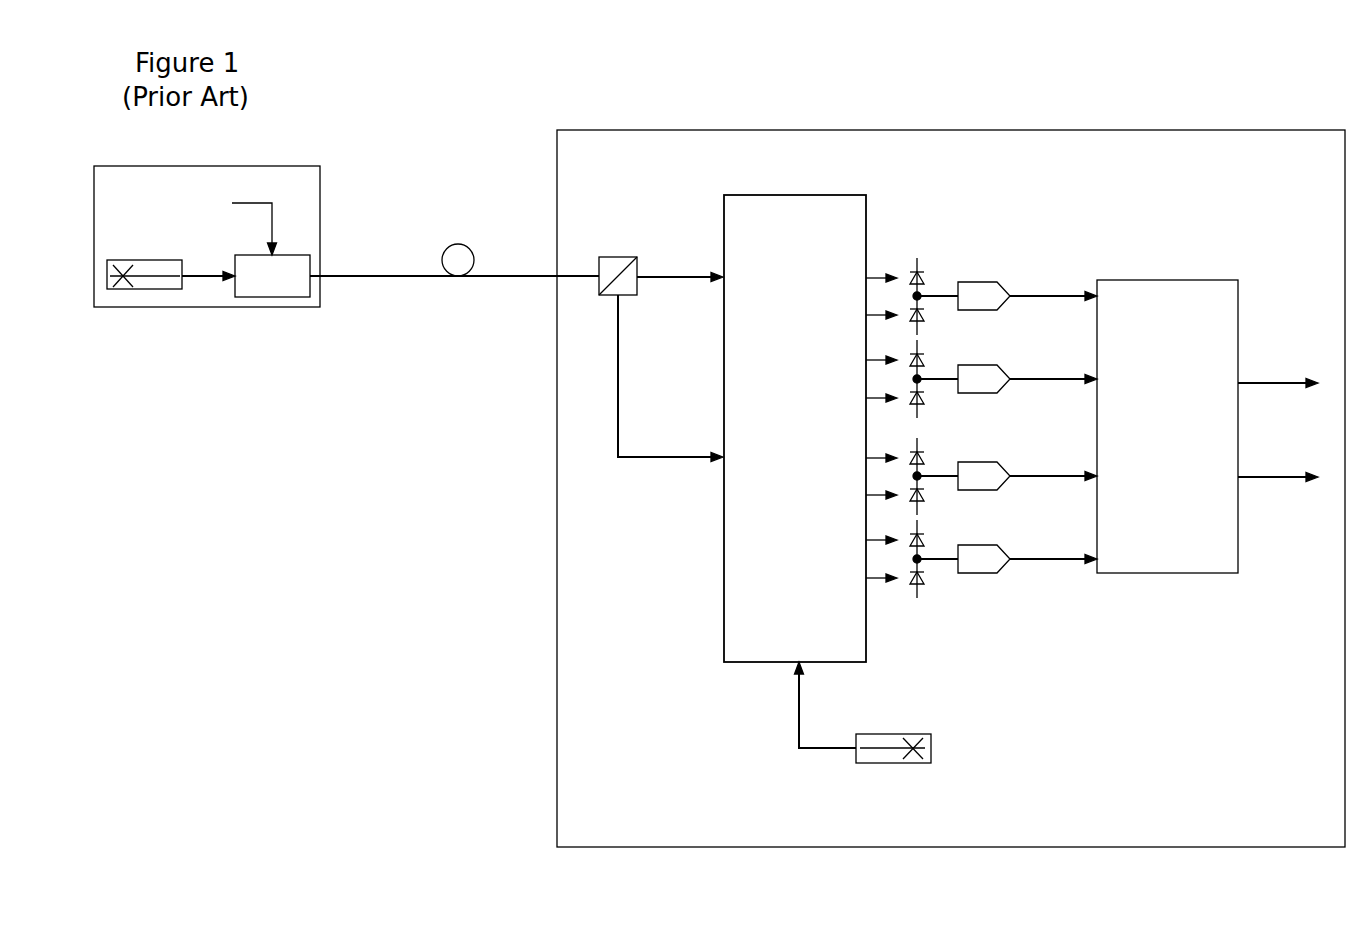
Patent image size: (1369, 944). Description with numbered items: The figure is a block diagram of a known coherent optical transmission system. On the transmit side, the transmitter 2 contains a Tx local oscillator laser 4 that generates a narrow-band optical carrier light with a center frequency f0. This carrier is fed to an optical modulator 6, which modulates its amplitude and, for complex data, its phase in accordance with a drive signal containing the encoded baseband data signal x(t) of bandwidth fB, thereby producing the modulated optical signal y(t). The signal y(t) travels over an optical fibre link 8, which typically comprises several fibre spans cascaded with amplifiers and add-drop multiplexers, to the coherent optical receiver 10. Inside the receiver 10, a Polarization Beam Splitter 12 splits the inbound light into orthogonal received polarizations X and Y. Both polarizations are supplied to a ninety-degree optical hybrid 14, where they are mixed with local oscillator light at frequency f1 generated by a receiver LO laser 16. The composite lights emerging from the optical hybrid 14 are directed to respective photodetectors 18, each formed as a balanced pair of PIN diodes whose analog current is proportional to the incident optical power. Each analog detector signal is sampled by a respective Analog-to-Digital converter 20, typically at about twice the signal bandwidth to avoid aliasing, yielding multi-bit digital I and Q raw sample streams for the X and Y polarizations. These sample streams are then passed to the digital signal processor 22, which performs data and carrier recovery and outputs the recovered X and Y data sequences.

The transmitter 2 is at (312, 166).
The Tx local oscillator laser 4 is at (145, 260).
The optical modulator 6 is at (270, 297).
The optical fibre link 8 is at (435, 277).
The coherent optical receiver 10 is at (648, 130).
The Polarization Beam Splitter 12 is at (617, 257).
The 90° optical hybrid 14 is at (780, 282).
The receiver LO laser 16 is at (887, 763).
The photodetector 18 is at (917, 236).
The Analog-to-Digital converter 20 is at (975, 282).
The digital signal processor 22 is at (1156, 379).